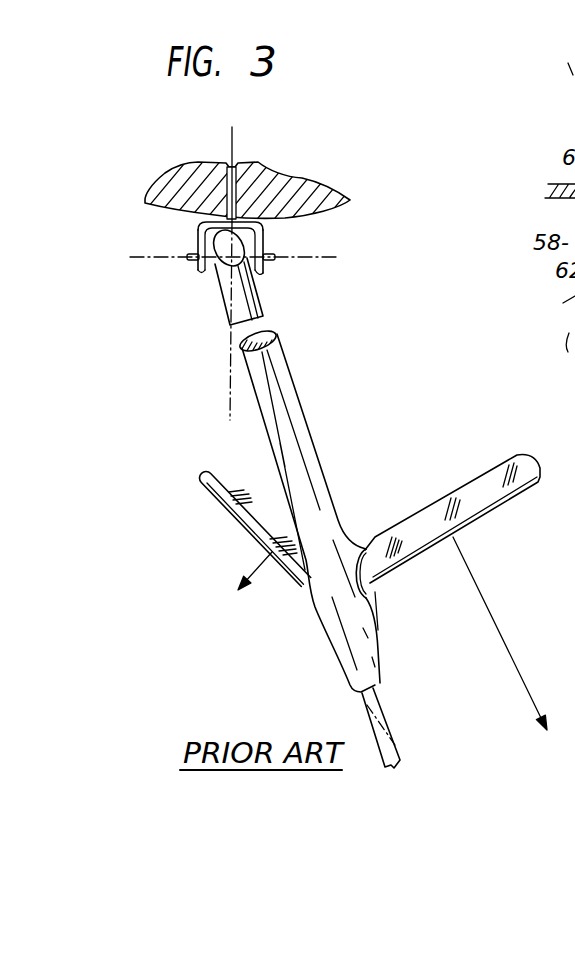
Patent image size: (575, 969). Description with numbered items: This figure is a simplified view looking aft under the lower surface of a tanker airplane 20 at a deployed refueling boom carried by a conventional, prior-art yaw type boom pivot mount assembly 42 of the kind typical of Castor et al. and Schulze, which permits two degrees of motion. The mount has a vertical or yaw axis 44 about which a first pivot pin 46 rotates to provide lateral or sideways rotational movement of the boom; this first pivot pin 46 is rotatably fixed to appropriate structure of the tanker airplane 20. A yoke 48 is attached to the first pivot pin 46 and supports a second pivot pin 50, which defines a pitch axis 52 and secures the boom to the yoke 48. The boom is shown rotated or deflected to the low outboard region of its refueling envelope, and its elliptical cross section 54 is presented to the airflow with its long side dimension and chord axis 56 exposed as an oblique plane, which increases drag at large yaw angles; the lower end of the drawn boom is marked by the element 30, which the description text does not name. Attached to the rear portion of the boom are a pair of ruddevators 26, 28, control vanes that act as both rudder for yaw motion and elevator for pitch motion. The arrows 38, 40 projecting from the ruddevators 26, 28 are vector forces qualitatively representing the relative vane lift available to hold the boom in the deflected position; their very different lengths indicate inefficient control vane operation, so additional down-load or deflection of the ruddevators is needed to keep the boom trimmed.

The tanker airplane 20 is at (325, 186).
The vertical or yaw axis 44 is at (233, 133).
The first pivot pin 46 is at (242, 163).
The yoke 48 is at (199, 226).
The yaw type boom pivot mount assembly 42 is at (298, 232).
The pitch axis 52 is at (328, 260).
The elliptical cross section 54 is at (208, 258).
The second pivot pin 50 is at (275, 260).
The chord axis 56 is at (237, 297).
The ruddevator 28 is at (233, 482).
The ruddevator 26 is at (478, 482).
The arrow 40 is at (236, 590).
The arrow 38 is at (511, 651).
The rod 30 is at (397, 745).